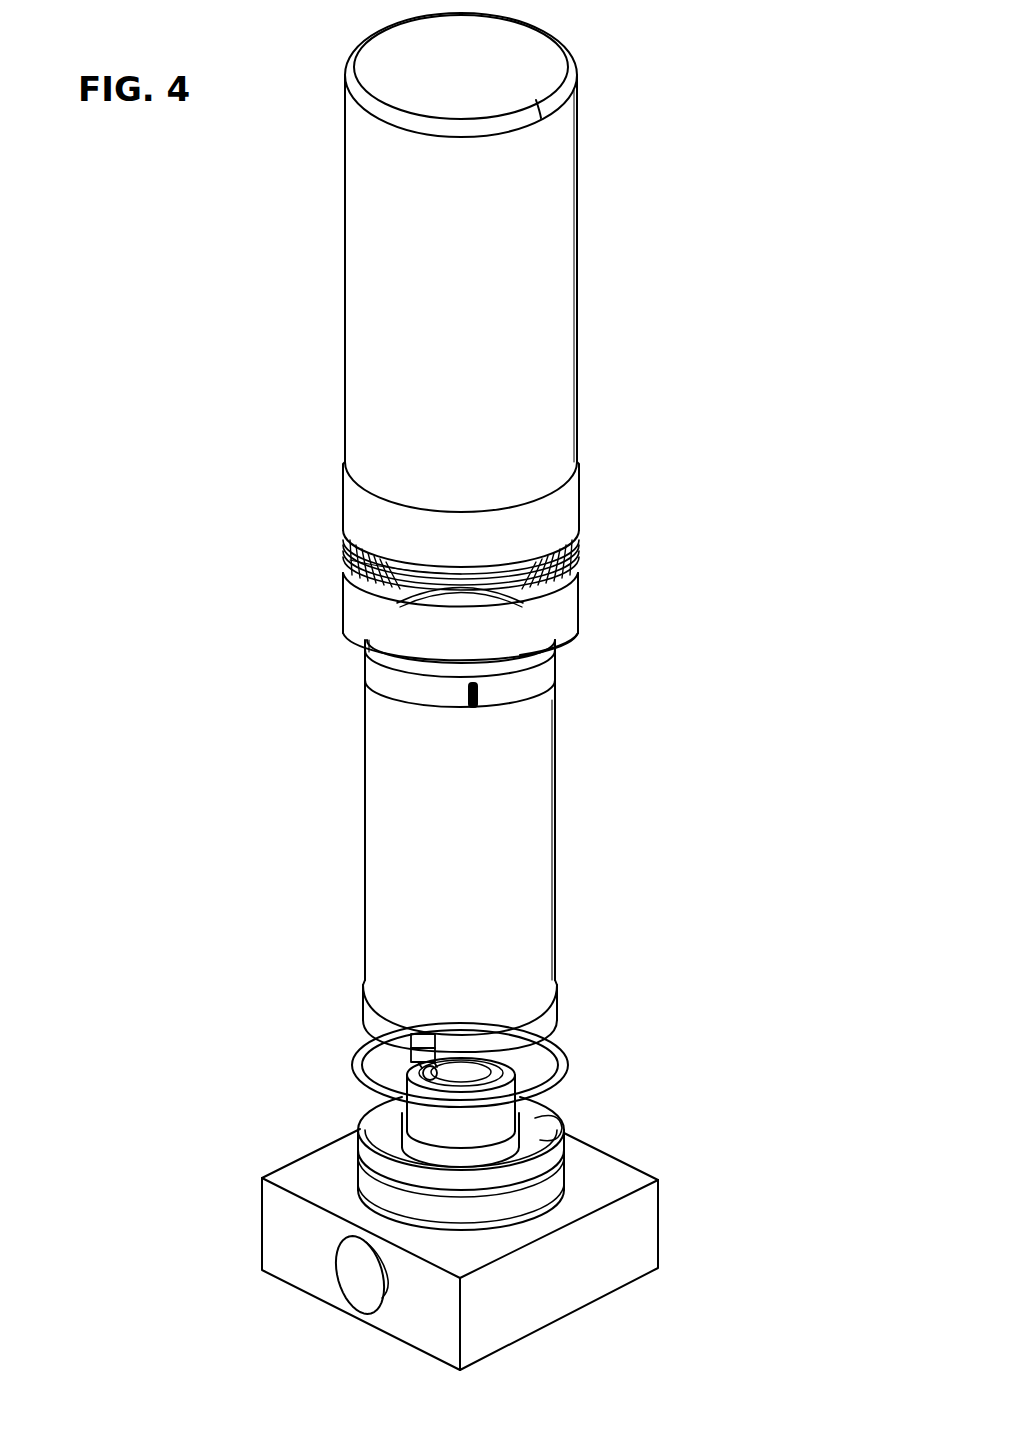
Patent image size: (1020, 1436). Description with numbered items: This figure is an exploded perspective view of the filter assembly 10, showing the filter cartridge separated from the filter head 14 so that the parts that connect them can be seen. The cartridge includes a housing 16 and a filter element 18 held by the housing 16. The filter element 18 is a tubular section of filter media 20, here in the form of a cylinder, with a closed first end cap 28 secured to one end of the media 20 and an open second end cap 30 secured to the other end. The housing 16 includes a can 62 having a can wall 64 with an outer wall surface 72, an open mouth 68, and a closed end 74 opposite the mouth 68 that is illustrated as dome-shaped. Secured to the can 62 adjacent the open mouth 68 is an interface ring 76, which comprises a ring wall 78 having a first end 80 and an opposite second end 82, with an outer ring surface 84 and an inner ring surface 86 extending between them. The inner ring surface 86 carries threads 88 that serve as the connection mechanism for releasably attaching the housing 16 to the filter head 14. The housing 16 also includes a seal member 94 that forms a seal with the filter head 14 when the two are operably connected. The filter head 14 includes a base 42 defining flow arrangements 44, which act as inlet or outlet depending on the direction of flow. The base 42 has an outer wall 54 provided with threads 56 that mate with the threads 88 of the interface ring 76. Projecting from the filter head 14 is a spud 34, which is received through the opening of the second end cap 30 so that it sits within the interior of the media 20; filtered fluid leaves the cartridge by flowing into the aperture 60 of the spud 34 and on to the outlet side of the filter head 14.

The filter assembly 10 is at (747, 86).
The filter head 14 is at (522, 1216).
The housing 16 is at (580, 268).
The filter element 18 is at (450, 846).
The filter media 20 is at (548, 822).
The first end cap 28 is at (365, 665).
The second end cap 30 is at (545, 1021).
The spud 34 is at (497, 1123).
The base 42 is at (600, 1285).
The flow arrangements 44 is at (355, 1292).
The outer wall 54 is at (356, 1160).
The threads 56 is at (548, 1183).
The aperture 60 is at (424, 1072).
The can 62 is at (344, 290).
The can wall 64 is at (344, 355).
The open mouth 68 is at (565, 576).
The outer wall surface 72 is at (580, 352).
The closed end 74 is at (500, 60).
The interface ring 76 is at (350, 590).
The ring wall 78 is at (570, 608).
The first end 80 is at (348, 555).
The second end 82 is at (563, 632).
The outer ring surface 84 is at (348, 612).
The inner ring surface 86 is at (575, 547).
The threads 88 is at (350, 548).
The seal member 94 is at (567, 1048).